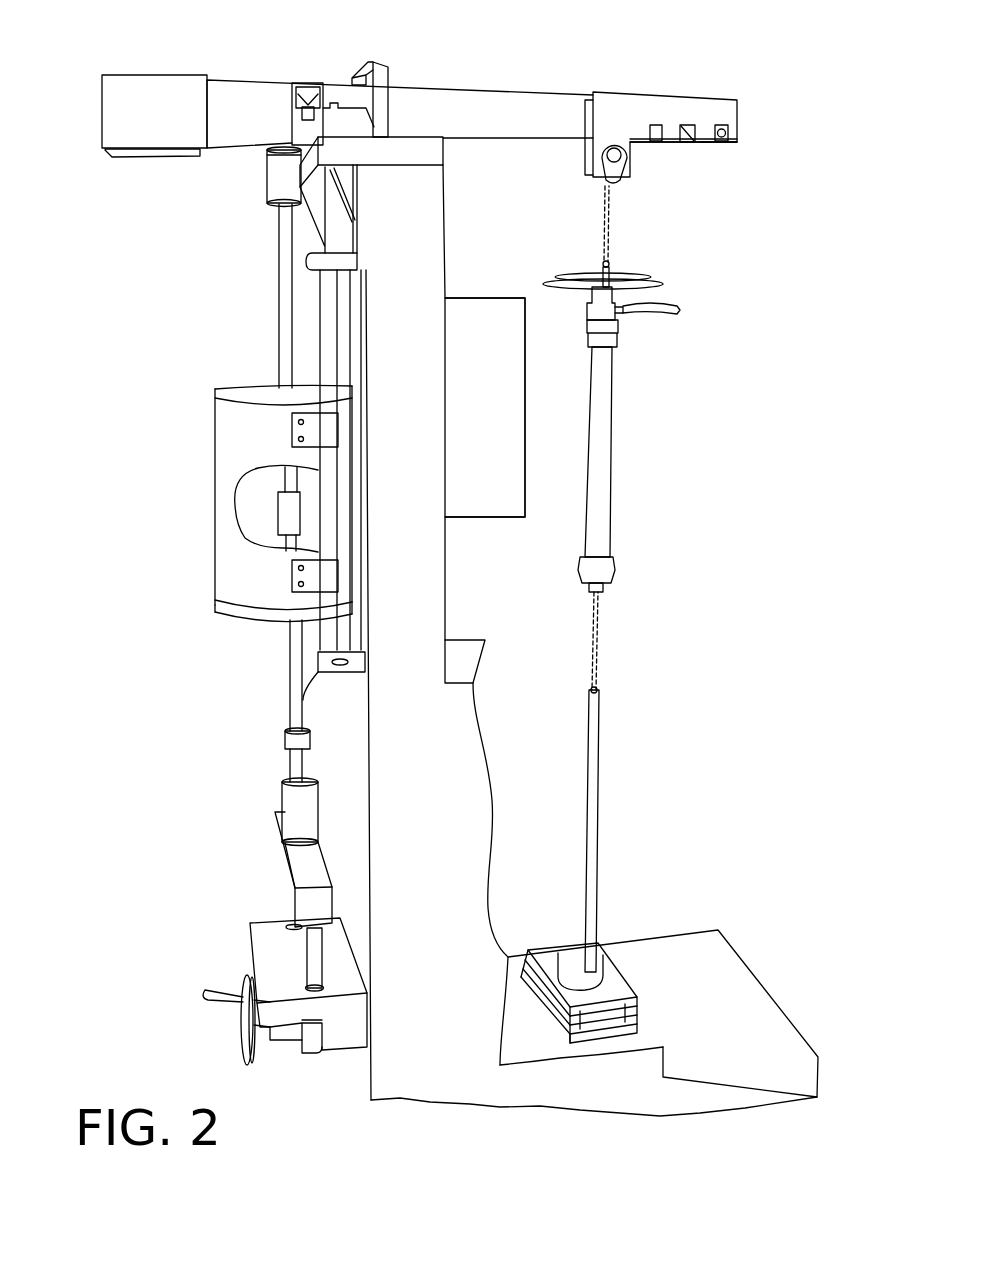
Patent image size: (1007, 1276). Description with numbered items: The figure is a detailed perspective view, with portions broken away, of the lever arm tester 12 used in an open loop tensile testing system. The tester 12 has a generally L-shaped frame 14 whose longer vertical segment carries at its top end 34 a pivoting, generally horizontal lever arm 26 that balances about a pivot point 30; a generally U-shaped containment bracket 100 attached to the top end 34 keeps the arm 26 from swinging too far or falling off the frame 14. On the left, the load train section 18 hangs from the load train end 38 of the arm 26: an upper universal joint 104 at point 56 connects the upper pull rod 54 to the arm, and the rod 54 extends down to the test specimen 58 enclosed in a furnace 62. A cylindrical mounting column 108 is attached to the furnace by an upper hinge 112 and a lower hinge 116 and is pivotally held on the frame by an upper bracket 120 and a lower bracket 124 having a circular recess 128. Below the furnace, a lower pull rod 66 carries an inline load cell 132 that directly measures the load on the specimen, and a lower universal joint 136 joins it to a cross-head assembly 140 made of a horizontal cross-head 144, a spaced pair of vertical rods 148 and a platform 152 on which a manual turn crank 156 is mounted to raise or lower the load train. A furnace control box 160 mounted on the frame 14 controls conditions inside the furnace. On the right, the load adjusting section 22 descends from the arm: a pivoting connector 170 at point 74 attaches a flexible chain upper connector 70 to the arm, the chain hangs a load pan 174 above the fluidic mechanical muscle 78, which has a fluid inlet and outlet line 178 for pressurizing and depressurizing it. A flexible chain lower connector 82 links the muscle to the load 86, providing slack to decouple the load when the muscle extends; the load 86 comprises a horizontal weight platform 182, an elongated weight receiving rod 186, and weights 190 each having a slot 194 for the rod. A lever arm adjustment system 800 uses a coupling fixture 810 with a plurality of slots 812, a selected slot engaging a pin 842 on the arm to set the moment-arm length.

The lever arm tester 12 is at (582, 91).
The frame 14 is at (438, 577).
The load train section 18 is at (160, 546).
The load adjusting section 22 is at (668, 537).
The lever arm 26 is at (507, 91).
The pivot point 30 is at (308, 92).
The top end 34 is at (432, 210).
The load train end 38 is at (233, 78).
The upper pull rod 54 is at (285, 258).
The connection point 56 is at (268, 171).
The test specimen 58 is at (283, 510).
The furnace 62 is at (215, 460).
The lower pull rod 66 is at (290, 689).
The upper connector 70 is at (612, 223).
The connection point 74 is at (728, 158).
The fluidic mechanical muscle 78 is at (600, 466).
The lower connector 82 is at (601, 641).
The load 86 is at (652, 863).
The containment bracket 100 is at (380, 72).
The upper universal joint 104 is at (284, 188).
The mounting column 108 is at (330, 357).
The upper hinge 112 is at (292, 441).
The lower hinge 116 is at (292, 578).
The upper bracket 120 is at (360, 266).
The lower bracket 124 is at (330, 690).
The circular recess 128 is at (322, 666).
The inline load cell 132 is at (285, 741).
The lower universal joint 136 is at (292, 802).
The cross-head assembly 140 is at (225, 898).
The cross-head 144 is at (295, 868).
The rods 148 is at (305, 975).
The platform 152 is at (345, 1040).
The manual turn crank 156 is at (243, 1050).
The furnace control box 160 is at (502, 437).
The pivoting connector 170 is at (608, 168).
The load pan 174 is at (630, 276).
The fluid inlet and outlet line 178 is at (663, 313).
The weight platform 182 is at (716, 1022).
The weight receiving rod 186 is at (598, 760).
The weights 190 is at (650, 1020).
The slot 194 is at (614, 963).
The lever arm adjustment system 800 is at (703, 76).
The coupling fixture 810 is at (745, 112).
The slots 812 is at (657, 125).
The pin 842 is at (733, 134).